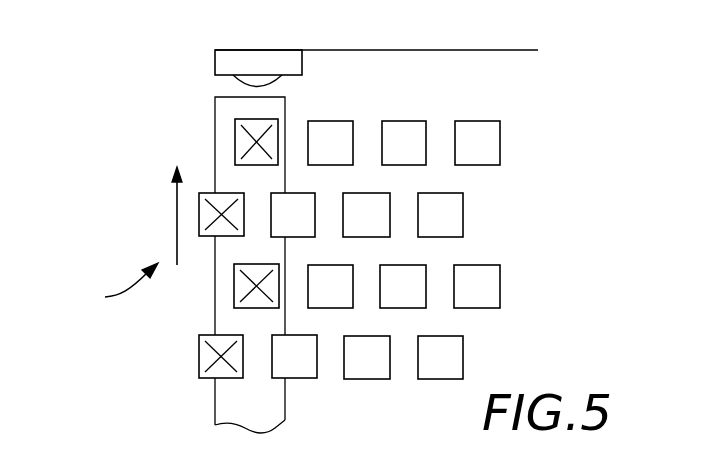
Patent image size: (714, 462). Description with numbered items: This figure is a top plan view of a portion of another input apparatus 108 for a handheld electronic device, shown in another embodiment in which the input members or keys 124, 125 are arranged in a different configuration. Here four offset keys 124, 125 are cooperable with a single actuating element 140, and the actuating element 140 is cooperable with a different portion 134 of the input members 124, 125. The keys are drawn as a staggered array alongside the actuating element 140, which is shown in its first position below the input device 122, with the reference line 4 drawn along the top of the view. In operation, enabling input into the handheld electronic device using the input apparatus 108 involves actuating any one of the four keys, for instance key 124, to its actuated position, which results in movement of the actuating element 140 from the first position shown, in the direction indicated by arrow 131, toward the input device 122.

The substrate 4 is at (405, 50).
The input device 122 is at (232, 86).
The key 125 is at (279, 122).
The actuating element 140 is at (222, 112).
The input apparatus 108 is at (405, 422).
The key 124 is at (200, 355).
The arrow 131 is at (172, 208).
The portion 134 is at (113, 289).